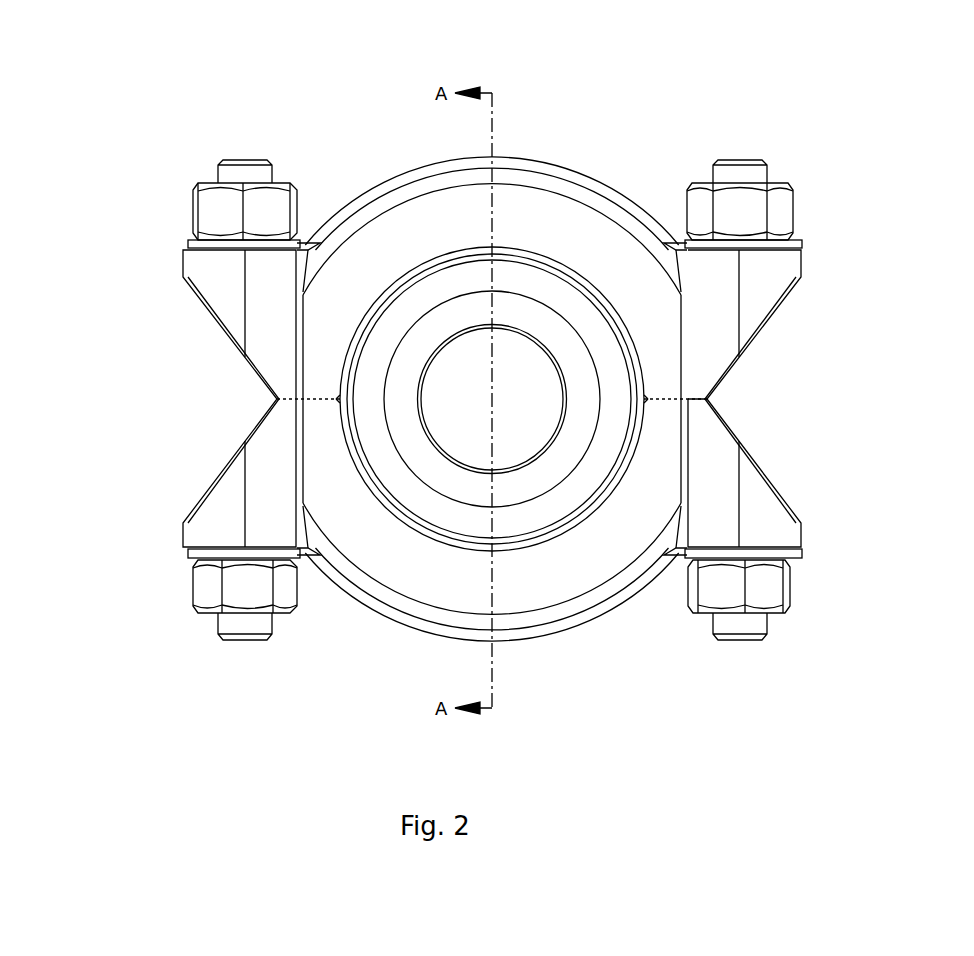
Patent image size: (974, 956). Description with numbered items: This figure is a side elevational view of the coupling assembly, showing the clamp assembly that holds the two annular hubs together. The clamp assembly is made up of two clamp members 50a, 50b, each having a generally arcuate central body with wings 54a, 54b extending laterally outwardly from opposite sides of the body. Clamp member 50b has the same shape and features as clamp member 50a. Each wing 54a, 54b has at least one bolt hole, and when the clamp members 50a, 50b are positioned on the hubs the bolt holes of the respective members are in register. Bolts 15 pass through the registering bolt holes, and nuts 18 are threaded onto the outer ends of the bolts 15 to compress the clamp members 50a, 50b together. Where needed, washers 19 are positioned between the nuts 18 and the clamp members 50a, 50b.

The bolt 15 is at (227, 400).
The nut 18 is at (218, 212).
The washer 19 is at (187, 238).
The clamp member 50a is at (567, 230).
The clamp member 50b is at (578, 568).
The wing 54a is at (783, 268).
The wing 54b is at (788, 525).